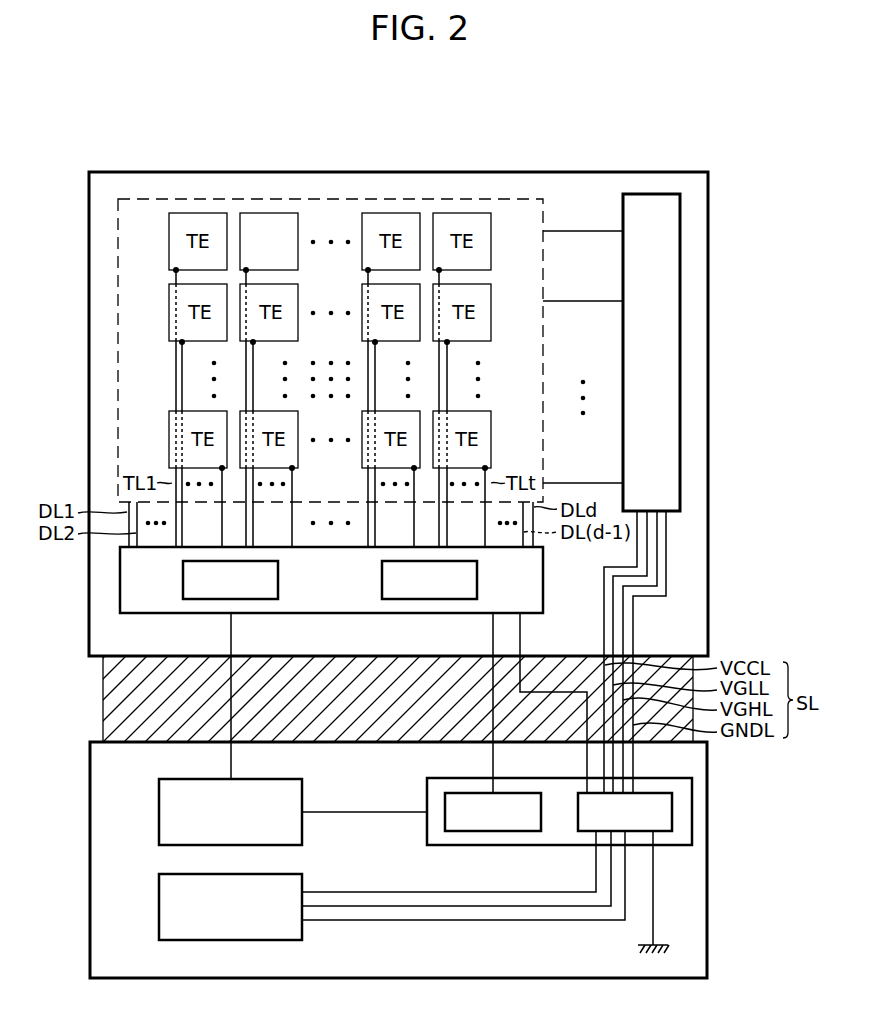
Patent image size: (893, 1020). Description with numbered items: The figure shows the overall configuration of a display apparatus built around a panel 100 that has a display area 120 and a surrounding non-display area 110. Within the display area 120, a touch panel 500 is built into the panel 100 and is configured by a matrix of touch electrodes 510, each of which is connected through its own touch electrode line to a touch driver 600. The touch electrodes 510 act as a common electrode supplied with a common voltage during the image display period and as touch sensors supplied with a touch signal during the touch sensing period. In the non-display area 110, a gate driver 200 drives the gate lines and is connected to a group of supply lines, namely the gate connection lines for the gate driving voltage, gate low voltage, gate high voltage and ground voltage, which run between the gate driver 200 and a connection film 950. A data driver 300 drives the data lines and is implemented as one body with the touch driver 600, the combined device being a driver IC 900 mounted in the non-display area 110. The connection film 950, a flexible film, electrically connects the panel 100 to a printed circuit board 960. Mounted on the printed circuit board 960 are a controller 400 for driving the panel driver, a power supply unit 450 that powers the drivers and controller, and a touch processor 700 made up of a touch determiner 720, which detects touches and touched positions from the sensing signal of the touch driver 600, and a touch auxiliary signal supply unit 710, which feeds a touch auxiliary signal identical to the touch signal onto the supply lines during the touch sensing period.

The panel 100 is at (89, 390).
The non-display area 110 is at (685, 589).
The display area 120 is at (343, 212).
The gate driver 200 is at (666, 364).
The data driver 300 is at (245, 592).
The controller 400 is at (245, 824).
The power supply unit 450 is at (245, 919).
The touch panel 500 is at (420, 199).
The touch electrode 510 is at (277, 213).
The touch driver 600 is at (445, 592).
The touch processor 700 is at (692, 810).
The touch auxiliary signal supply unit 710 is at (640, 824).
The touch determiner 720 is at (508, 824).
The driver IC 900 is at (117, 575).
The connection film 950 is at (103, 700).
The printed circuit board 960 is at (90, 858).